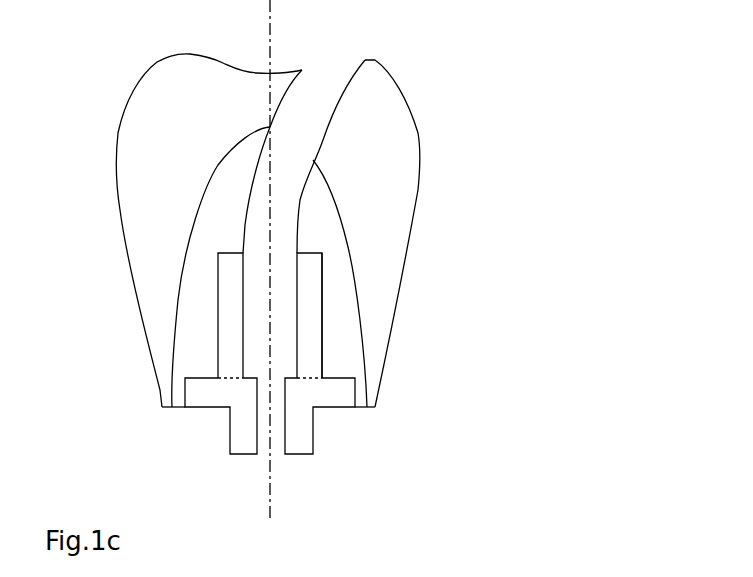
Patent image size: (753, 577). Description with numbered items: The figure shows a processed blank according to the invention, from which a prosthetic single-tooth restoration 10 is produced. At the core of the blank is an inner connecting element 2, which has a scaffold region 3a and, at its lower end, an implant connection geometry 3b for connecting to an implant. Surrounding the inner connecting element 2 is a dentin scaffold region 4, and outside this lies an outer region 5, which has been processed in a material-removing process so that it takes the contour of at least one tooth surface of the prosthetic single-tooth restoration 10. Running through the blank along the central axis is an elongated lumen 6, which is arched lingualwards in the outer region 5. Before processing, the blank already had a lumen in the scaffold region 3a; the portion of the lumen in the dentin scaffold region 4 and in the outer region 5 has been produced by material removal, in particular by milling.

The prosthetic single-tooth restoration 10 is at (440, 145).
The inner connecting element 2 is at (325, 303).
The dentin scaffold region 4 is at (241, 190).
The outer region 5 is at (380, 242).
The elongated lumen 6 is at (325, 78).
The scaffold region 3a is at (310, 353).
The implant connection geometry 3b is at (300, 418).